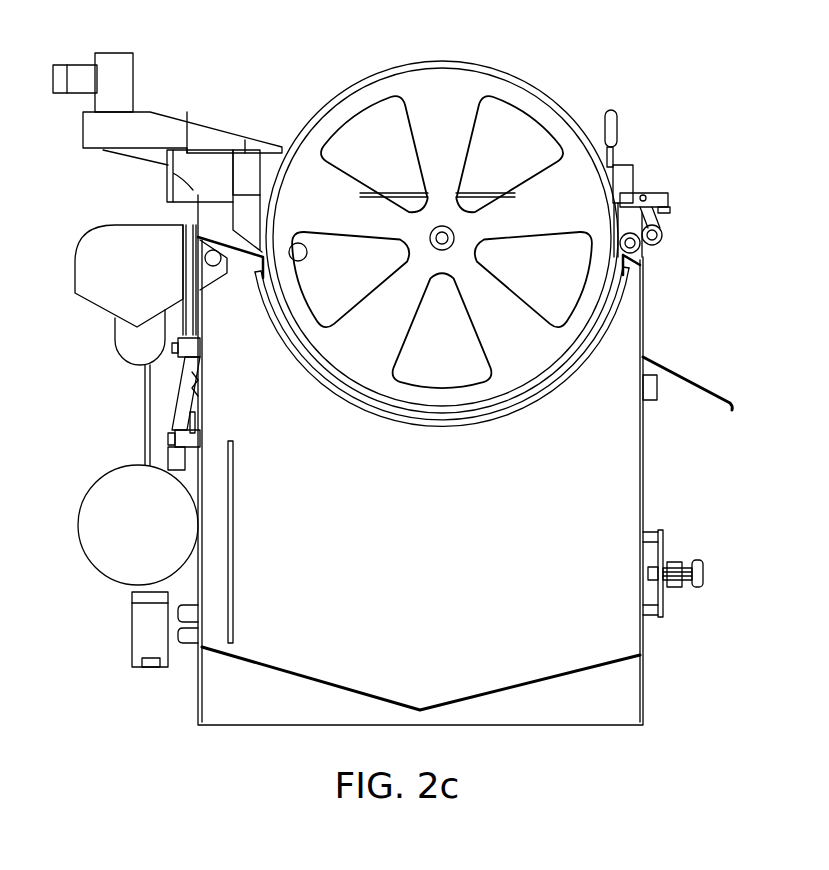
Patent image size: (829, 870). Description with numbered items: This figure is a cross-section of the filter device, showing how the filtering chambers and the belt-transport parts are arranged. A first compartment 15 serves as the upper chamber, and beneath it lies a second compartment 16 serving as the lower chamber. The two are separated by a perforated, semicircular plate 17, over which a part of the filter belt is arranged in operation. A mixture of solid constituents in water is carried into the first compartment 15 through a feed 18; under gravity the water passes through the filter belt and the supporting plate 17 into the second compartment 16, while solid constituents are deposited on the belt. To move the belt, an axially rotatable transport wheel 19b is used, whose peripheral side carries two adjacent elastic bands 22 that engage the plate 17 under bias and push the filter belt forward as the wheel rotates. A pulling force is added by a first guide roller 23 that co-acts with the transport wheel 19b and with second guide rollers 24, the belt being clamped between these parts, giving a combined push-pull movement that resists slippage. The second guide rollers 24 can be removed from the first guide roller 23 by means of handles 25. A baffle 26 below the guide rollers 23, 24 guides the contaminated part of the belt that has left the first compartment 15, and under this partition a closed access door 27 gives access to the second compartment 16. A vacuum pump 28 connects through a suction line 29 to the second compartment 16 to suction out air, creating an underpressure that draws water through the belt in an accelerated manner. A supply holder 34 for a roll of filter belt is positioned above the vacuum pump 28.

The first compartment 15 is at (454, 337).
The second compartment 16 is at (440, 526).
The perforated, semicircular plate 17 is at (345, 396).
The feed 18 is at (165, 124).
The transport wheel 19b is at (445, 134).
The elastic bands 22 is at (441, 61).
The first guide roller 23 is at (640, 250).
The second guide rollers 24 is at (665, 233).
The handles 25 is at (618, 122).
The baffle 26 is at (690, 378).
The access door 27 is at (665, 538).
The vacuum pump 28 is at (112, 527).
The suction line 29 is at (185, 412).
The supply holder 34 is at (113, 265).